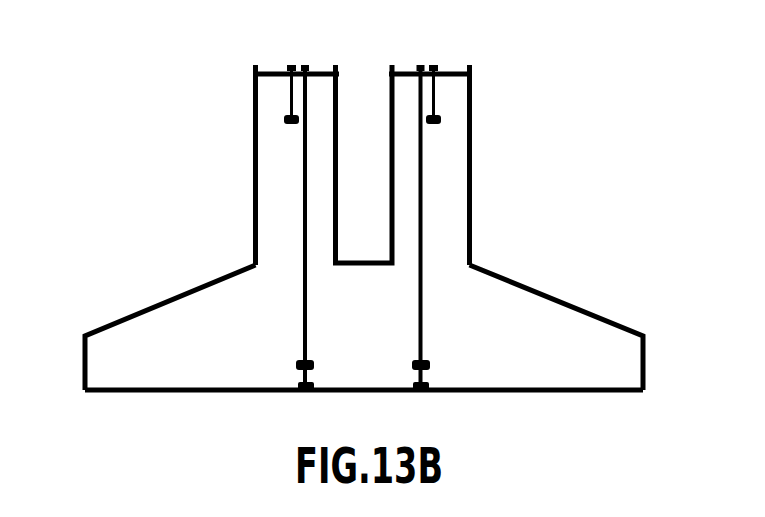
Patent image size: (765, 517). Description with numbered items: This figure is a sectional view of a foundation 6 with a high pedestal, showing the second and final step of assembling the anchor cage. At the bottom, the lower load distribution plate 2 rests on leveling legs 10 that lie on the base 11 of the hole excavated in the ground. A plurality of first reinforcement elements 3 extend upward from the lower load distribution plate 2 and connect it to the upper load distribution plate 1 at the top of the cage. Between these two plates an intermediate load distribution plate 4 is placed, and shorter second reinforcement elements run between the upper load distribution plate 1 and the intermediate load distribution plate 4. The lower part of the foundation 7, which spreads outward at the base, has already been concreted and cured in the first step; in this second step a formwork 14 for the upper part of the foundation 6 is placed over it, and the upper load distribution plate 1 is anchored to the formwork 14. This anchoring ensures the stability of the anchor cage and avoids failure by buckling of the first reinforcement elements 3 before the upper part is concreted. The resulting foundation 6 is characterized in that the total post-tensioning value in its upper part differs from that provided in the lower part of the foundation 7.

The upper load distribution plate 1 is at (437, 68).
The lower load distribution plate 2 is at (296, 371).
The first reinforcement elements 3 is at (303, 308).
The intermediate load distribution plate 4 is at (440, 119).
The foundation 6 is at (546, 172).
The lower part of the foundation 7 is at (631, 320).
The leveling legs 10 is at (317, 391).
The base of the foundation 11 is at (543, 389).
The formwork 14 is at (474, 223).